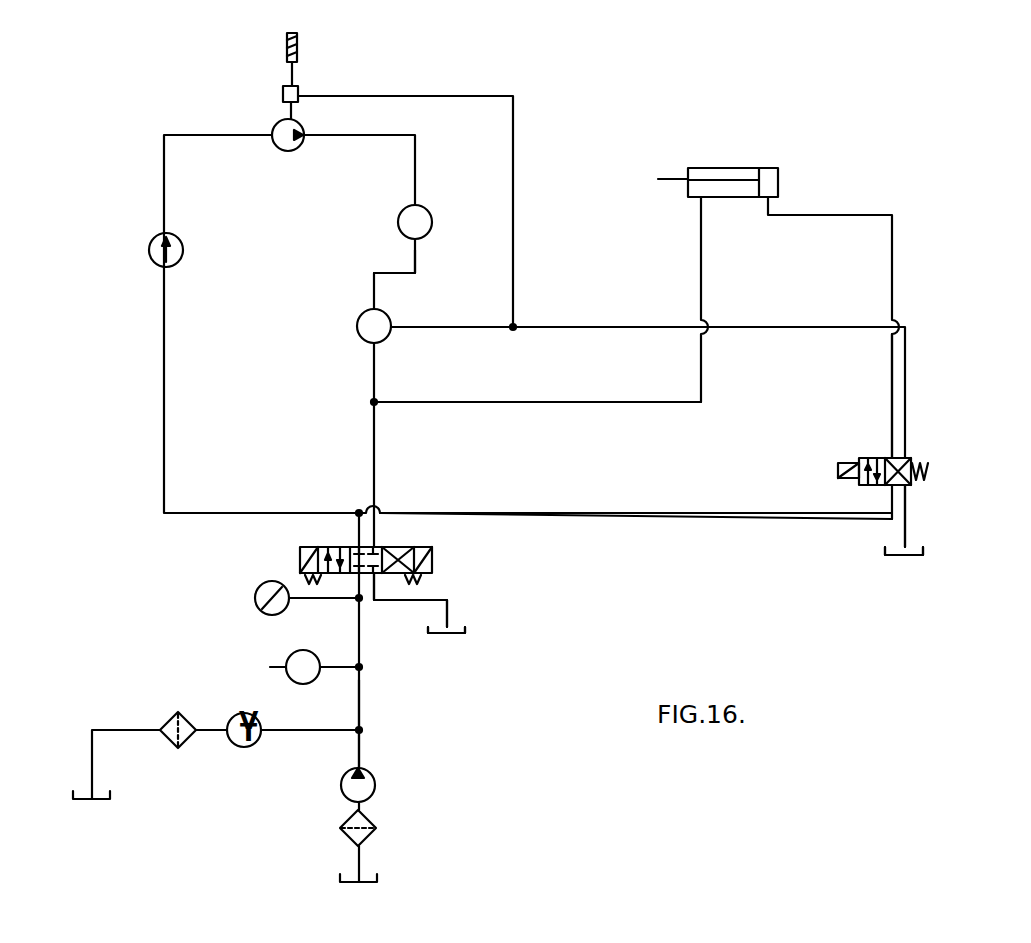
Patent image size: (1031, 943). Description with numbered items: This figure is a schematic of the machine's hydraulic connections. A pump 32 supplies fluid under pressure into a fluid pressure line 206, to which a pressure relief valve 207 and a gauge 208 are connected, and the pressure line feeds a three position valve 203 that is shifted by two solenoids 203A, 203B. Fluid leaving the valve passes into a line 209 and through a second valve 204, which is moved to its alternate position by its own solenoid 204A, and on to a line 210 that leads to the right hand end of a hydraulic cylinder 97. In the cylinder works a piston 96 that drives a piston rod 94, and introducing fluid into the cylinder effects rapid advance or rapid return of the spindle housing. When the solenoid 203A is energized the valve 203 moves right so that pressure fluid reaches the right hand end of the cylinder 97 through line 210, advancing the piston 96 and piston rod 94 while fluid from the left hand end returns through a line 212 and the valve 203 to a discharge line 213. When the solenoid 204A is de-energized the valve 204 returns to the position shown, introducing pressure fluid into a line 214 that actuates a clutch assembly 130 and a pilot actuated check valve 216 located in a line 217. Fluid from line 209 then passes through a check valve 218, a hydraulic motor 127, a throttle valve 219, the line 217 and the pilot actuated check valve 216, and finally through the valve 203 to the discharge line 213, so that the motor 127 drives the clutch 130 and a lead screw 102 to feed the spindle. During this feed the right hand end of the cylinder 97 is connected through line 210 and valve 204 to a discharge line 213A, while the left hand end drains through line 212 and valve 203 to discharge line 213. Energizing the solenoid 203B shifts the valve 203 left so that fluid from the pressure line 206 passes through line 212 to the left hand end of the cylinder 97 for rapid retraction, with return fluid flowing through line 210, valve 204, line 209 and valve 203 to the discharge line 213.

The pump 32 is at (375, 788).
The piston rod 94 is at (672, 181).
The piston 96 is at (762, 186).
The hydraulic cylinder 97 is at (722, 168).
The lead screw 102 is at (287, 45).
The hydraulic motor 127 is at (290, 152).
The clutch assembly 130 is at (283, 95).
The three position valve 203 is at (390, 547).
The solenoid 203A is at (300, 550).
The solenoid 203B is at (433, 555).
The valve 204 is at (906, 460).
The solenoid 204A is at (836, 466).
The fluid pressure line 206 is at (361, 698).
The pressure relief valve 207 is at (288, 660).
The gauge 208 is at (255, 598).
The line 209 is at (683, 519).
The line 210 is at (890, 388).
The line 212 is at (576, 403).
The discharge line 213 is at (448, 612).
The discharge line 213A is at (906, 528).
The line 214 is at (790, 327).
The pilot actuated check valve 216 is at (357, 325).
The line 217 is at (416, 266).
The check valve 218 is at (150, 250).
The throttle valve 219 is at (397, 222).